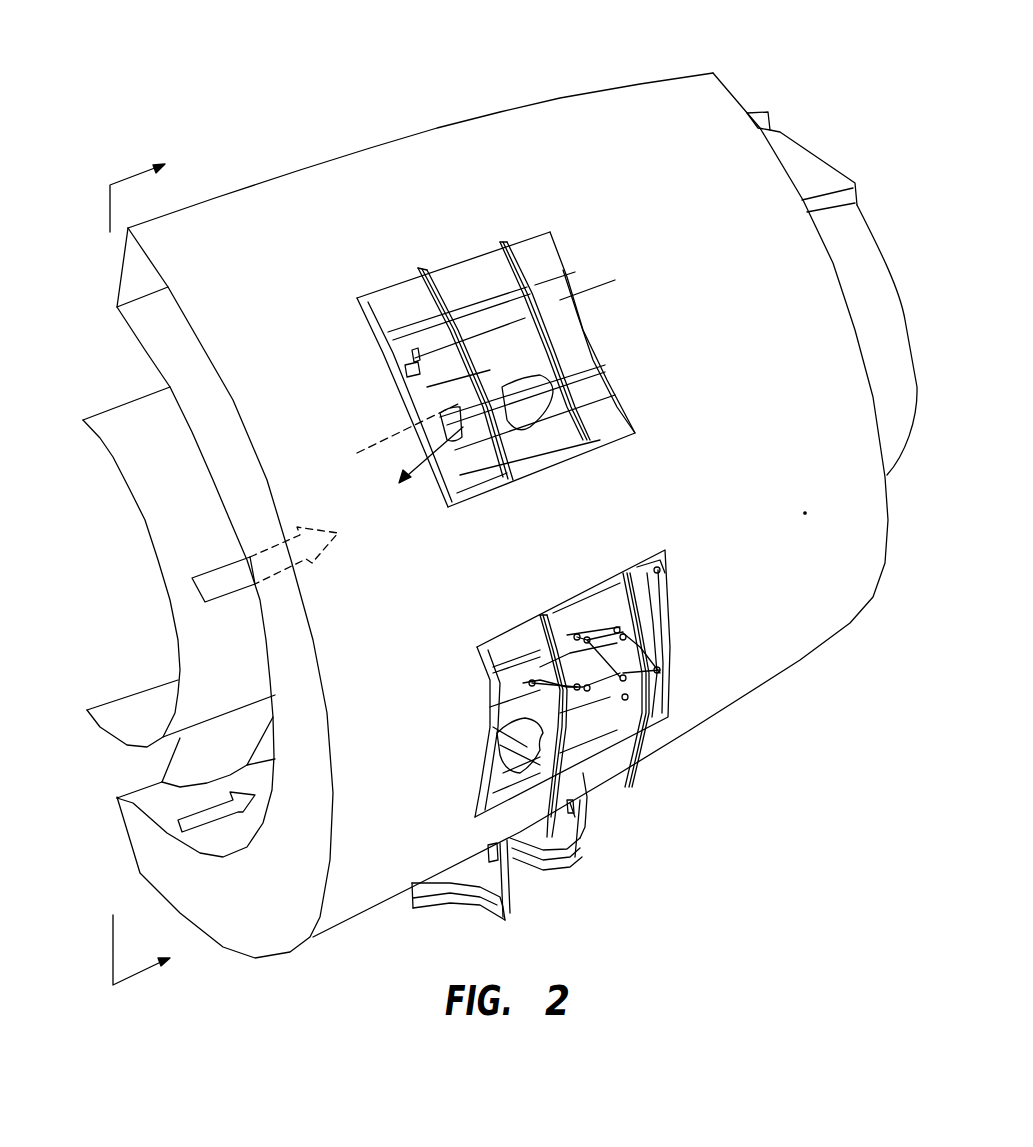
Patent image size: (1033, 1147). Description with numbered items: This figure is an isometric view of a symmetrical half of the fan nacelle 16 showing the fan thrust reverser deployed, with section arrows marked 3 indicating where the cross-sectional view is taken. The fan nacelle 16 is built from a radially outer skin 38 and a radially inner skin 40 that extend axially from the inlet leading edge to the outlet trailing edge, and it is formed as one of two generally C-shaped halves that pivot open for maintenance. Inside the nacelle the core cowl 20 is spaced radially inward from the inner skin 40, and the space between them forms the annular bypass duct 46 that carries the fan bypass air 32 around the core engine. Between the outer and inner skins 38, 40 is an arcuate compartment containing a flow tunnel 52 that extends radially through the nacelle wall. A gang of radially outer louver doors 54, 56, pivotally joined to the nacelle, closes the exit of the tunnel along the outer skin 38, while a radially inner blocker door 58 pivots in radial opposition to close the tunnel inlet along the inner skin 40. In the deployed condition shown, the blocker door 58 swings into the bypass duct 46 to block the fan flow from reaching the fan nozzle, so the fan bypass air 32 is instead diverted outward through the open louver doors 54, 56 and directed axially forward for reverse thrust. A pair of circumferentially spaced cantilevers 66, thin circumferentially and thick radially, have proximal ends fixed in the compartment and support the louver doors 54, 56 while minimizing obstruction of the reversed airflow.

The fan nacelle 16 is at (485, 112).
The core cowl 20 is at (162, 463).
The fan bypass air 32 is at (217, 567).
The outer skin 38 is at (312, 653).
The inner skin 40 is at (260, 612).
The bypass duct 46 is at (130, 376).
The flow tunnel 52 is at (440, 367).
The louver door 54 is at (593, 780).
The louver door 56 is at (650, 740).
The blocker door 58 is at (555, 445).
The cantilevers 66 is at (517, 745).
The section line 3 is at (148, 565).